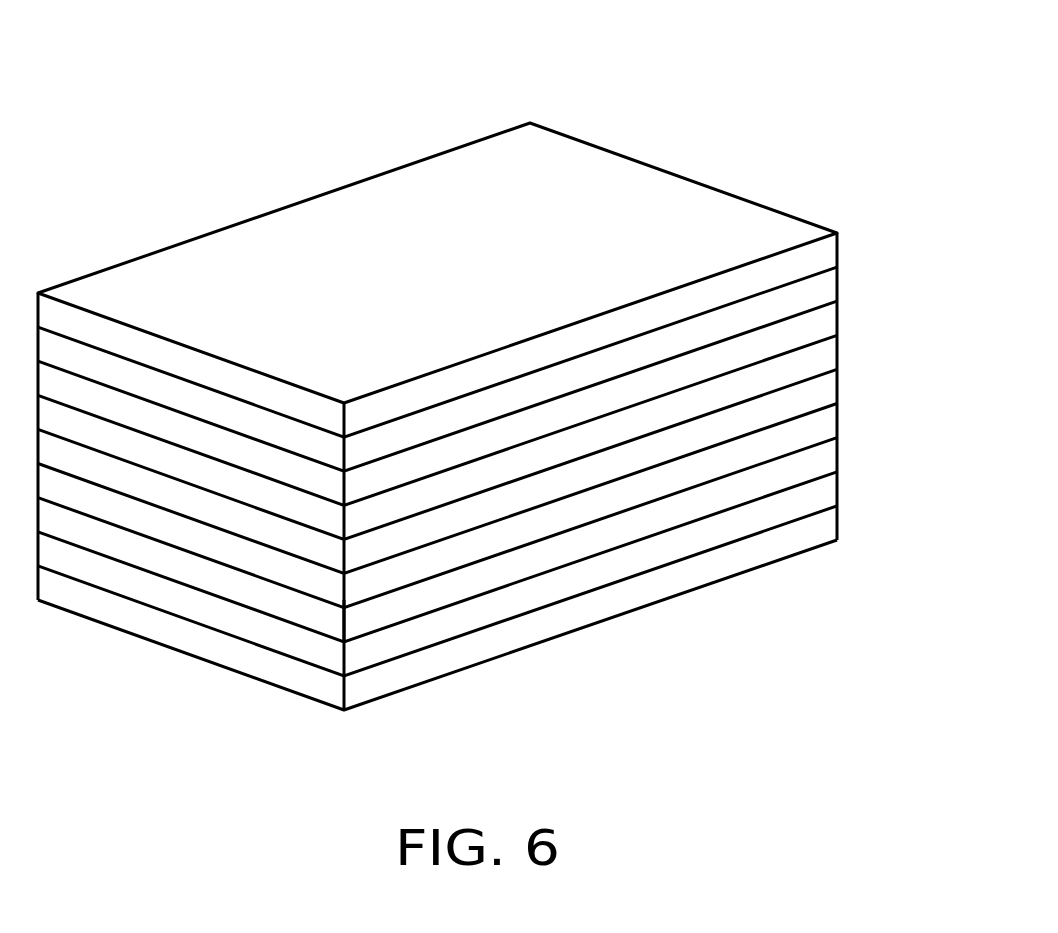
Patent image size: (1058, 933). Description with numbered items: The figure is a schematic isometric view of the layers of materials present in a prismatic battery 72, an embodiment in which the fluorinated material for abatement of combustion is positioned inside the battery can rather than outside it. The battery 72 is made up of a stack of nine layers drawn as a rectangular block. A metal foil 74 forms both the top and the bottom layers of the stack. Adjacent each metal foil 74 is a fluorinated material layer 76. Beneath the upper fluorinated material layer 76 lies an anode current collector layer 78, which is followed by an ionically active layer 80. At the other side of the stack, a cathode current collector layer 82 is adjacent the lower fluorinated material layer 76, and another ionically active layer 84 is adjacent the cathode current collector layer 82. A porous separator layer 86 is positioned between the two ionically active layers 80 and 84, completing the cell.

The prismatic battery 72 is at (298, 76).
The metal foil 74 is at (839, 245).
The fluorinated material layer 76 is at (839, 279).
The anode current collector layer 78 is at (839, 313).
The ionically active layer 80 is at (839, 348).
The porous separator layer 86 is at (839, 382).
The ionically active layer 84 is at (839, 417).
The cathode current collector layer 82 is at (839, 451).